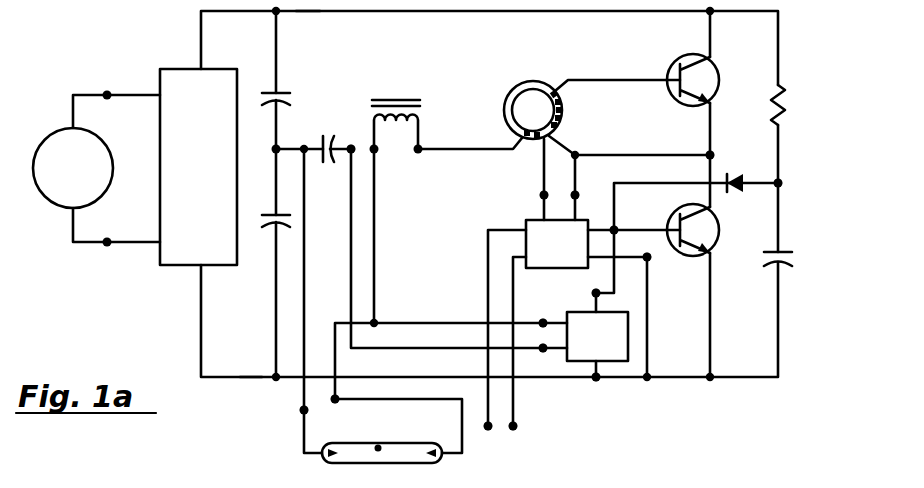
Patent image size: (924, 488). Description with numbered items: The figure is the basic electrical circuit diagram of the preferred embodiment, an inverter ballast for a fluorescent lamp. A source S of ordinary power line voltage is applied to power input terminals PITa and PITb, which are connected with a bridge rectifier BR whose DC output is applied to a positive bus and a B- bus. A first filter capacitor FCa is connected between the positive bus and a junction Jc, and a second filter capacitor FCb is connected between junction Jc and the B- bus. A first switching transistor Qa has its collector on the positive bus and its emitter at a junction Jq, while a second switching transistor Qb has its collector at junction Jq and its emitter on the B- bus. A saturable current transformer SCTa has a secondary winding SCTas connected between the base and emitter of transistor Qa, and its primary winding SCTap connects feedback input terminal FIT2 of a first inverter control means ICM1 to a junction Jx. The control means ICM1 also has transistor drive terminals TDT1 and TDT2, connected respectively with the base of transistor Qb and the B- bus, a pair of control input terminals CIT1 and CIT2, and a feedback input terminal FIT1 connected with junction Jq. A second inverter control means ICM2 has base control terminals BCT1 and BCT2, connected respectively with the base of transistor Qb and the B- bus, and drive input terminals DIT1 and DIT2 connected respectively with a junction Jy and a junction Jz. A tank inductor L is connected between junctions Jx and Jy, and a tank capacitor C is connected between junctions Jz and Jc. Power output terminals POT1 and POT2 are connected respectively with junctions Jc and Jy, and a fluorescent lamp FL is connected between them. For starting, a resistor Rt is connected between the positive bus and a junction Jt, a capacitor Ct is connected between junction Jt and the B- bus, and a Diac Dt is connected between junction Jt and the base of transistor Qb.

The source S is at (84, 183).
The power input terminal PITa is at (107, 92).
The power input terminal PITb is at (107, 246).
The bridge rectifier BR is at (219, 185).
The first filter capacitor FCa is at (272, 90).
The second filter capacitor FCb is at (270, 228).
The B− bus B- is at (248, 379).
The junction Jc is at (279, 146).
The tank capacitor C is at (331, 165).
The junction Jz is at (353, 145).
The junction Jy is at (377, 152).
The tank inductor L is at (402, 97).
The junction Jx is at (420, 147).
The saturable current transformer SCTa is at (502, 84).
The secondary winding SCTas is at (563, 108).
The primary winding SCTap is at (532, 141).
The first switching transistor Qa is at (692, 54).
The resistor Rt is at (776, 92).
The junction Jq is at (708, 152).
The junction Jt is at (775, 181).
The Diac Dt is at (738, 189).
The second switching transistor Qb is at (716, 244).
The capacitor Ct is at (782, 263).
The first inverter control means ICM1 is at (580, 256).
The second inverter control means ICM2 is at (621, 348).
The feedback input terminal FIT1 is at (578, 192).
The feedback input terminal FIT2 is at (541, 195).
The transistor drive terminal TDT1 is at (617, 228).
The transistor drive terminal TDT2 is at (649, 260).
The base control terminal BCT1 is at (593, 293).
The base control terminal BCT2 is at (599, 380).
The drive input terminal DIT1 is at (540, 322).
The drive input terminal DIT2 is at (542, 352).
The control input terminal CIT1 is at (490, 430).
The control input terminal CIT2 is at (515, 430).
The power output terminal POT1 is at (303, 413).
The power output terminal POT2 is at (336, 403).
The fluorescent lamp FL is at (396, 440).